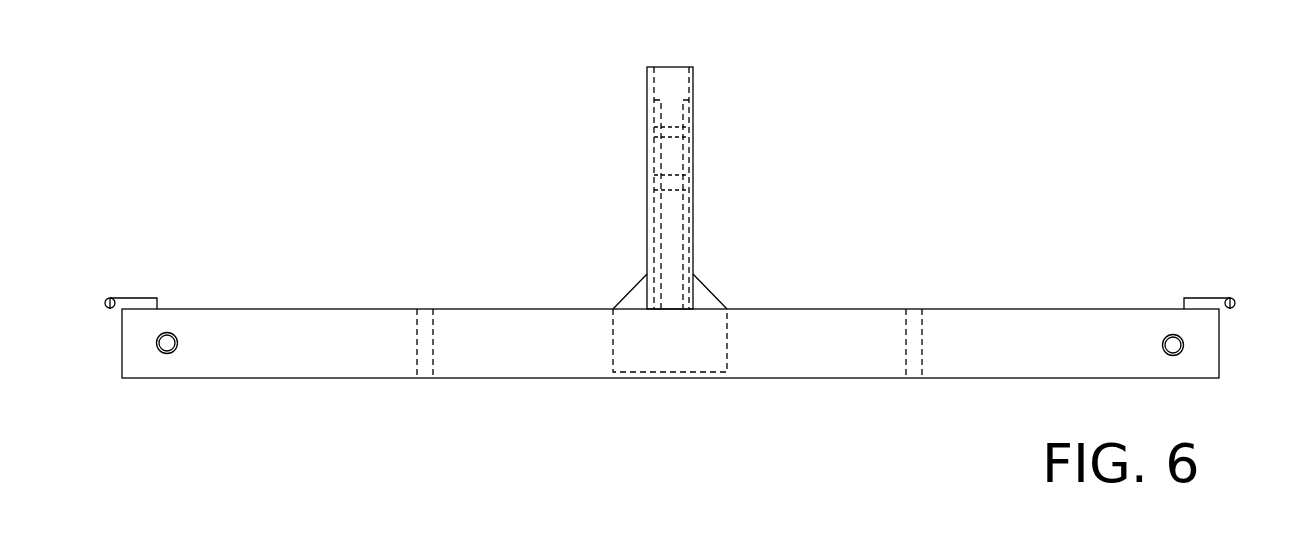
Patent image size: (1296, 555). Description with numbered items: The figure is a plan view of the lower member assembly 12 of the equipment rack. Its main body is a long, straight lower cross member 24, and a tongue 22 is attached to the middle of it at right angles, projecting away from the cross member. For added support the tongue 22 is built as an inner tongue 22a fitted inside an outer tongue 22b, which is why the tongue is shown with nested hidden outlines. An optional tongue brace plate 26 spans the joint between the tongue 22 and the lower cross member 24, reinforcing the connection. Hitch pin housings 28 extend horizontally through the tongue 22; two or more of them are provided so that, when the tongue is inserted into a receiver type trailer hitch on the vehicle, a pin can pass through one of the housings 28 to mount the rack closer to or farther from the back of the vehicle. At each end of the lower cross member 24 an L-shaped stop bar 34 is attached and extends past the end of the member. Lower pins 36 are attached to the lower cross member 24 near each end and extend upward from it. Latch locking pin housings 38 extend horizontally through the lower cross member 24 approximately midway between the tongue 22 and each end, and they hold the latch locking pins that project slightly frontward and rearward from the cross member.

The lower member assembly 12 is at (348, 152).
The tongue 22 is at (667, 167).
The inner tongue 22a is at (672, 100).
The outer tongue 22b is at (693, 248).
The lower cross member 24 is at (1025, 309).
The tongue brace plate 26 is at (633, 283).
The hitch pin housings 28 is at (677, 133).
The stop bar 34 is at (106, 299).
The lower pins 36 is at (172, 351).
The latch locking pin housings 38 is at (425, 378).